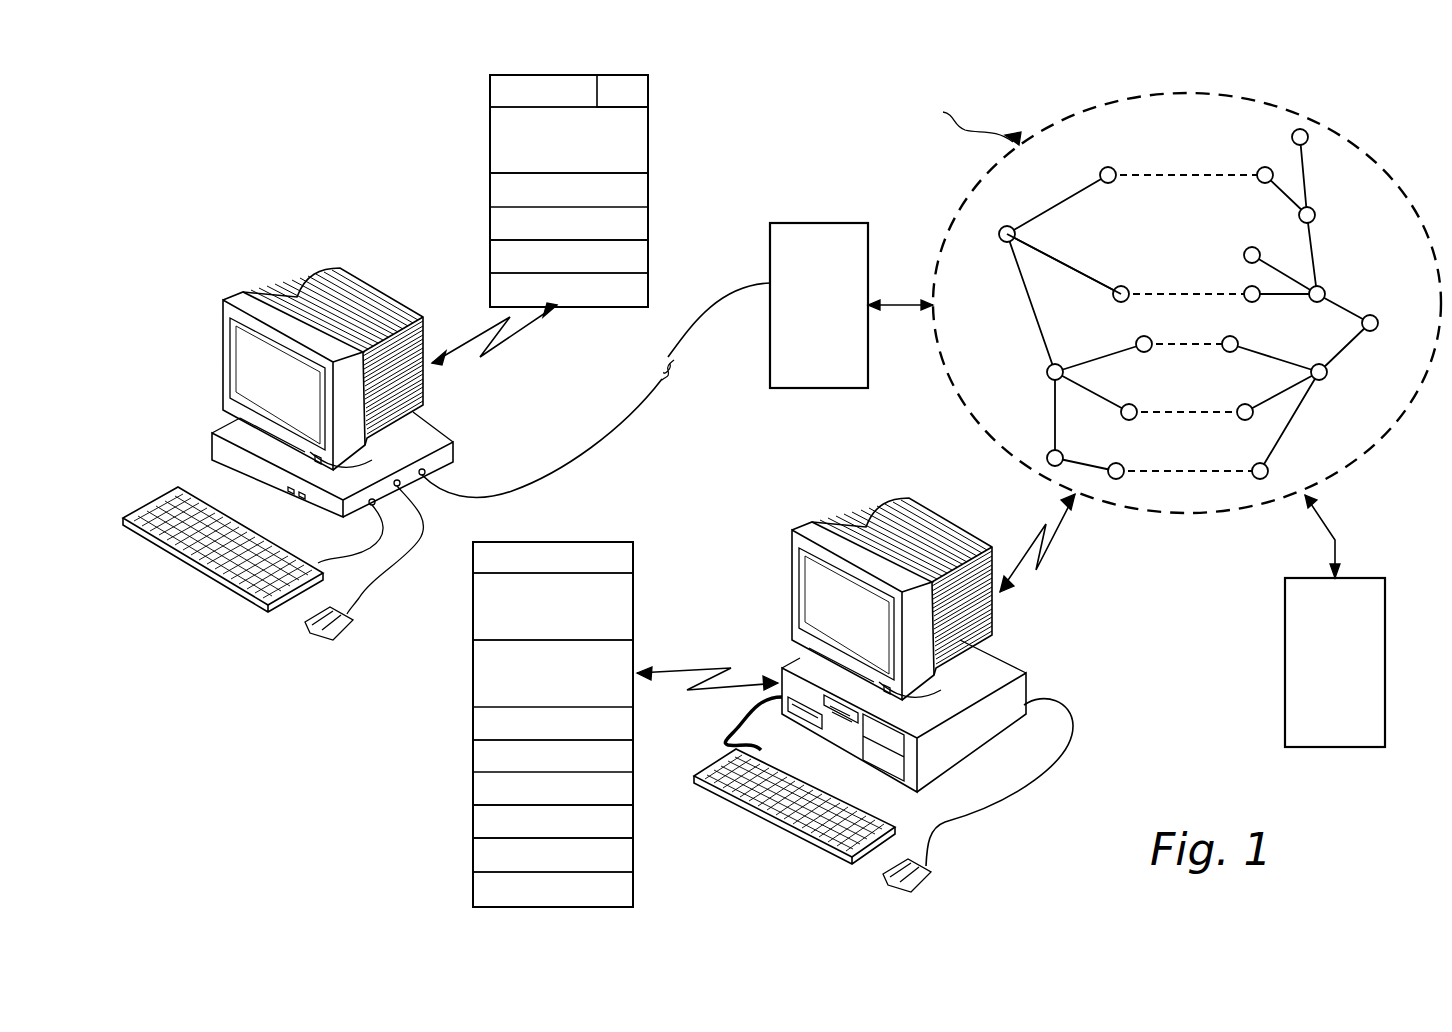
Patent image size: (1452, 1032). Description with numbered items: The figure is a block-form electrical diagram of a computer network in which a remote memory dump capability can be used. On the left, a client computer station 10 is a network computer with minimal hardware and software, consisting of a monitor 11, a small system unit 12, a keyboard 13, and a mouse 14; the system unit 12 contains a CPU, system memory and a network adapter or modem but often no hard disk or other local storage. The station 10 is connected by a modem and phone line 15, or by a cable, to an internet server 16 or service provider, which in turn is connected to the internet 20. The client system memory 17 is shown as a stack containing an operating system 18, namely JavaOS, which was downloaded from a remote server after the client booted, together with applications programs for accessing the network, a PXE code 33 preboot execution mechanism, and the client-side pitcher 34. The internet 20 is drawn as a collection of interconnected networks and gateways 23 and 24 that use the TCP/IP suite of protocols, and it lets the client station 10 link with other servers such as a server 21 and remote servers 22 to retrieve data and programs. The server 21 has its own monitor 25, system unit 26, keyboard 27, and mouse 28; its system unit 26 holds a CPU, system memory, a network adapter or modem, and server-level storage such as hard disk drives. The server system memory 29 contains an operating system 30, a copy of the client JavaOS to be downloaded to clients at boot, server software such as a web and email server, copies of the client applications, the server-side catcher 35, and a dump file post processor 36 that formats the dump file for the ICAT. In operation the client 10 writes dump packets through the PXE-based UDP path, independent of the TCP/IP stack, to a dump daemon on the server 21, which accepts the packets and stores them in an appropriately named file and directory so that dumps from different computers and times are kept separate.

The client computer station 10 is at (227, 262).
The monitor 11 is at (222, 355).
The system unit 12 is at (212, 447).
The keyboard 13 is at (194, 572).
The mouse 14 is at (309, 640).
The phone line 15 is at (648, 417).
The internet server 16 is at (842, 222).
The system memory 17 is at (464, 118).
The operating system 18 is at (634, 136).
The internet 20 is at (1366, 152).
The server 21 is at (1029, 609).
The server 22 is at (1285, 597).
The gateway 23 is at (1116, 187).
The gateway 24 is at (1088, 279).
The monitor 25 is at (792, 587).
The system unit 26 is at (782, 670).
The keyboard 27 is at (772, 826).
The mouse 28 is at (876, 870).
The system memory 29 is at (610, 523).
The operating system 30 is at (496, 594).
The PXE code 33 is at (650, 88).
The pitcher 34 is at (634, 252).
The catcher 35 is at (496, 824).
The dump file post processor 36 is at (488, 859).